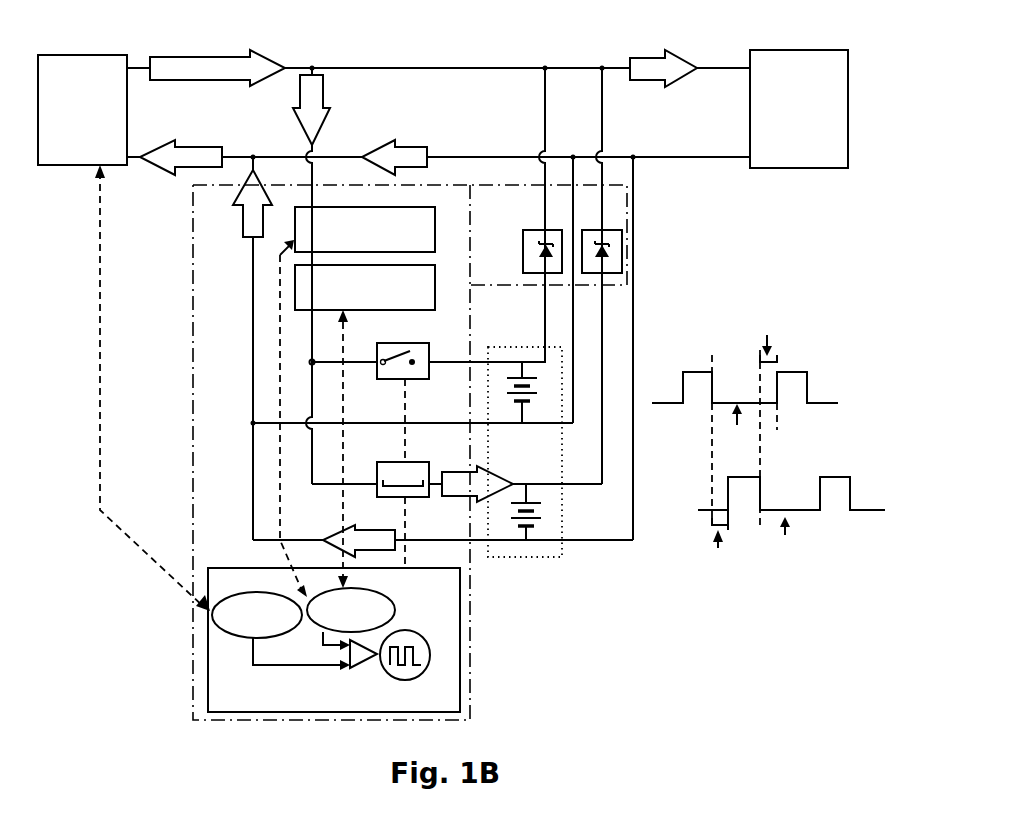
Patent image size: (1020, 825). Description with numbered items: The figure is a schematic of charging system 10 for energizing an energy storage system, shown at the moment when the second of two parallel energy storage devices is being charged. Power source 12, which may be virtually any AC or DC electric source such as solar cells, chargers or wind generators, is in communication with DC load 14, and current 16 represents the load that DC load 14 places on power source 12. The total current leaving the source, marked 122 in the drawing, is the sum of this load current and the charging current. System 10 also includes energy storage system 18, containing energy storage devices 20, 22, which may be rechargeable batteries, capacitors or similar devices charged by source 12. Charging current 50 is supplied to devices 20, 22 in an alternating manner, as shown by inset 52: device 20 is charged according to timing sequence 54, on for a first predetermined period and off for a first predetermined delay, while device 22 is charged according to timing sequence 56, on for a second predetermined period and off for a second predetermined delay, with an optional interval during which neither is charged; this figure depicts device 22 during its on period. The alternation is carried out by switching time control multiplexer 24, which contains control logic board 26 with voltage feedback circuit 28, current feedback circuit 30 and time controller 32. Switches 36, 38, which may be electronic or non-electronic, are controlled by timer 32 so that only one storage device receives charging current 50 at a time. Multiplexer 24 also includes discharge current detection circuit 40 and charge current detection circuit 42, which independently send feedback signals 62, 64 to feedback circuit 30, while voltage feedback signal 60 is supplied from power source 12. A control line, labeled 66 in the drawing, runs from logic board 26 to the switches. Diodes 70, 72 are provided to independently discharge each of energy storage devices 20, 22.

The charging system 10 is at (450, 40).
The power source 12 is at (109, 52).
The DC load 14 is at (758, 50).
The current 16 is at (395, 140).
The energy storage system 18 is at (560, 560).
The energy storage device 20 is at (505, 393).
The energy storage device 22 is at (560, 515).
The switching time control multiplexer 24 is at (193, 336).
The control logic board 26 is at (245, 568).
The voltage feedback circuit 28 is at (272, 638).
The current feedback circuit 30 is at (357, 583).
The time controller 32 is at (424, 639).
The switch 36 is at (397, 343).
The switch 38 is at (406, 462).
The discharge current detection circuit 40 is at (428, 198).
The charge current detection circuit 42 is at (435, 265).
The charging current 50 is at (332, 103).
The inset 52 is at (766, 431).
The timing sequence 54 is at (690, 350).
The timing sequence 56 is at (729, 460).
The voltage feedback signal 60 is at (100, 245).
The feedback signal 62 is at (280, 346).
The feedback signal 64 is at (343, 510).
The switch control line 66 is at (405, 555).
The diode 70 is at (535, 230).
The diode 72 is at (617, 232).
The total current Itotal 122 is at (190, 57).